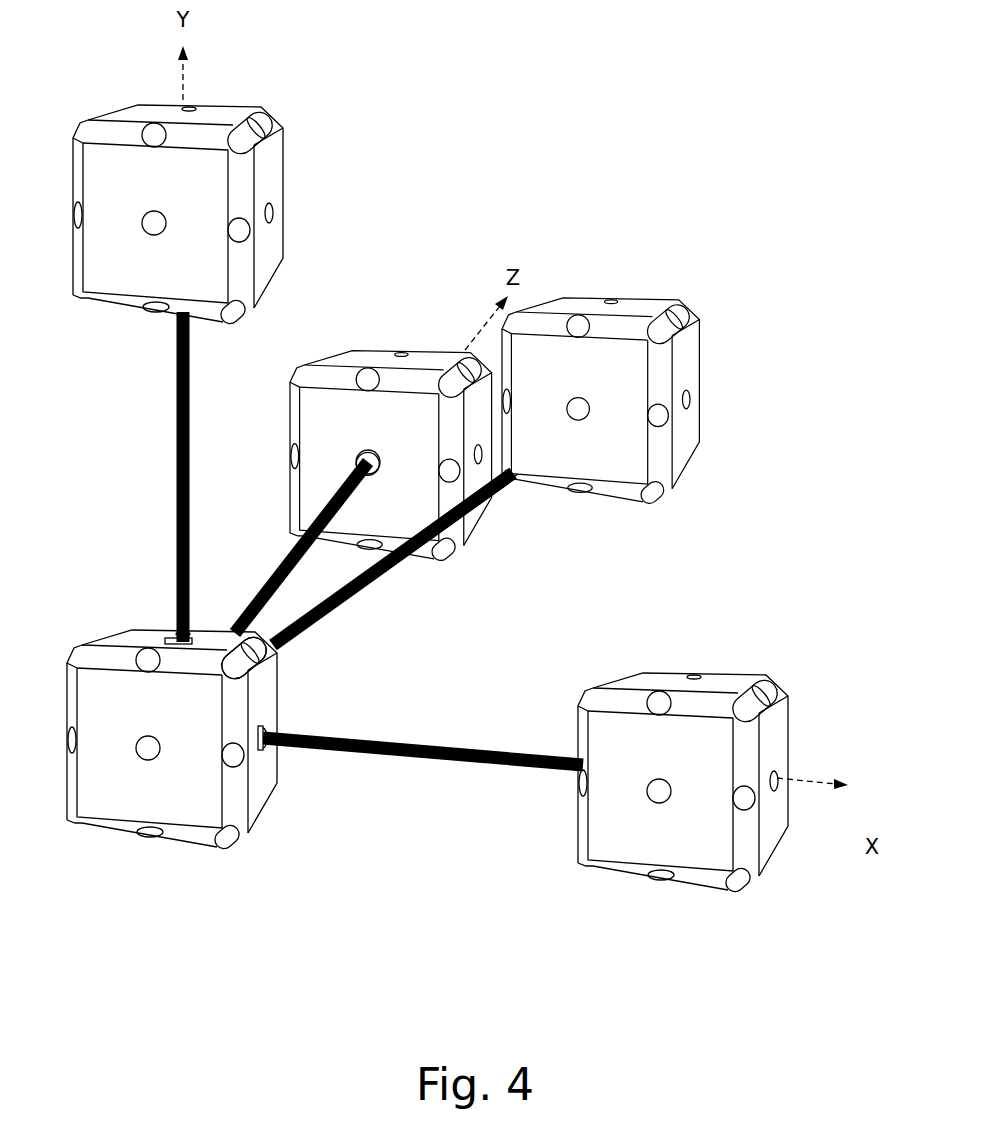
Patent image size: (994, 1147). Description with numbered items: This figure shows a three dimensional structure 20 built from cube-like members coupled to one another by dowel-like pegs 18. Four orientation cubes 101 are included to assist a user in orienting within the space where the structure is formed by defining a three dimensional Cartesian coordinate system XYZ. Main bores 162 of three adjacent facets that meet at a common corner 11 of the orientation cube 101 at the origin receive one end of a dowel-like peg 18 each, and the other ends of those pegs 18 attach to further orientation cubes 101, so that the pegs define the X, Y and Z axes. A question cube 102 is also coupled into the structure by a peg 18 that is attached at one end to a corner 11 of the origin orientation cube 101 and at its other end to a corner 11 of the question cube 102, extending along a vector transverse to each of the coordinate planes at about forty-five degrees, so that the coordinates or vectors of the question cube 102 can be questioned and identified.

The three dimensional structure 20 is at (692, 78).
The orientation cube 101 is at (135, 275).
The question cube 102 is at (561, 457).
The dowel-like peg 18 is at (338, 580).
The main bore 162 is at (249, 537).
The corner 11 is at (386, 584).